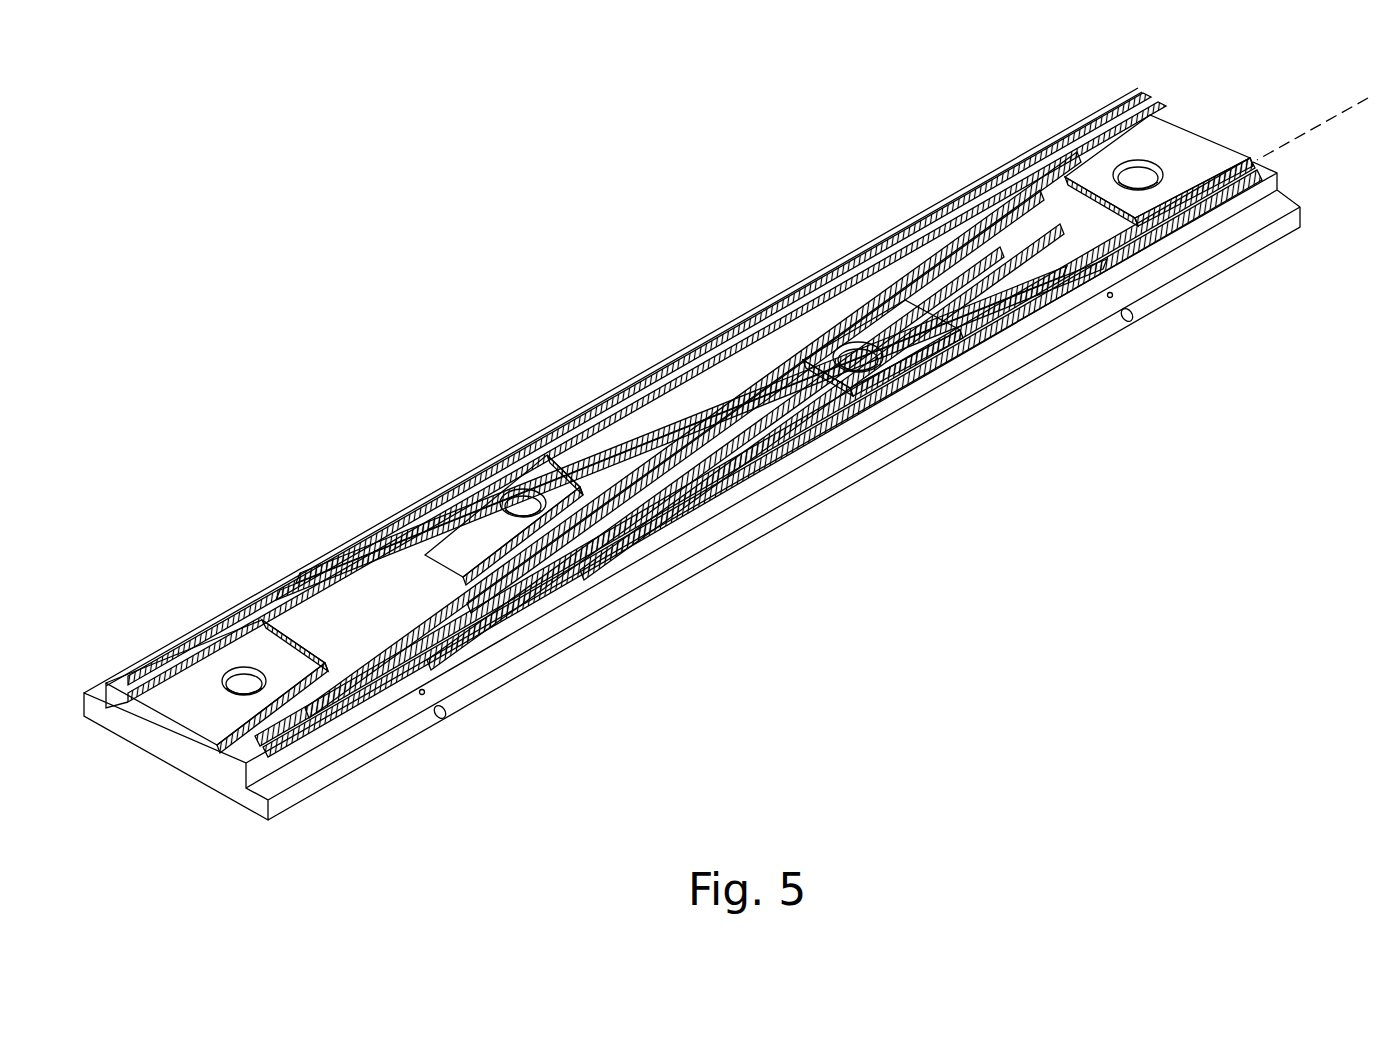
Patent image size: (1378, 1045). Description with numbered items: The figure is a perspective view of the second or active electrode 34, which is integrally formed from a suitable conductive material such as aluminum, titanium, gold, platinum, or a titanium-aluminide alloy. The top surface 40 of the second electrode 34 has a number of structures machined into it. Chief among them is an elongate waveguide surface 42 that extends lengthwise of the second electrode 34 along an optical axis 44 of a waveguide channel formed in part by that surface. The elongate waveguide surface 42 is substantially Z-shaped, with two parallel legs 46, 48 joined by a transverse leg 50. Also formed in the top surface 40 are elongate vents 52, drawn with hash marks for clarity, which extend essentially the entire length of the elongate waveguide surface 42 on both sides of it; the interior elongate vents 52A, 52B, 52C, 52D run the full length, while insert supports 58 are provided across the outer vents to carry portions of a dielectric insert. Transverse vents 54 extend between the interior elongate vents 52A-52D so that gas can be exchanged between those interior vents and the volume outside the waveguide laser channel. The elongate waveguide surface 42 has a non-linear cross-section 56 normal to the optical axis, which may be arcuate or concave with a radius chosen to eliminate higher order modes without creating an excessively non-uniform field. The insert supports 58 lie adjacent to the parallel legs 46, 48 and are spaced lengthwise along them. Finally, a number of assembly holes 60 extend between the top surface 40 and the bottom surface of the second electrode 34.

The second electrode 34 is at (692, 483).
The top surface 40 is at (679, 429).
The elongate waveguide surface 42 is at (845, 410).
The optical axis 44 is at (1345, 105).
The parallel leg 46 is at (1050, 300).
The parallel leg 48 is at (732, 327).
The transverse leg 50 is at (412, 568).
The elongate vents 52 is at (664, 435).
The interior elongate vent 52A is at (645, 408).
The interior elongate vent 52B is at (483, 563).
The interior elongate vent 52C is at (580, 570).
The interior elongate vent 52D is at (690, 505).
The transverse vents 54 is at (365, 582).
The non-linear cross-section 56 is at (225, 760).
The insert supports 58 is at (420, 657).
The assembly holes 60 is at (664, 416).